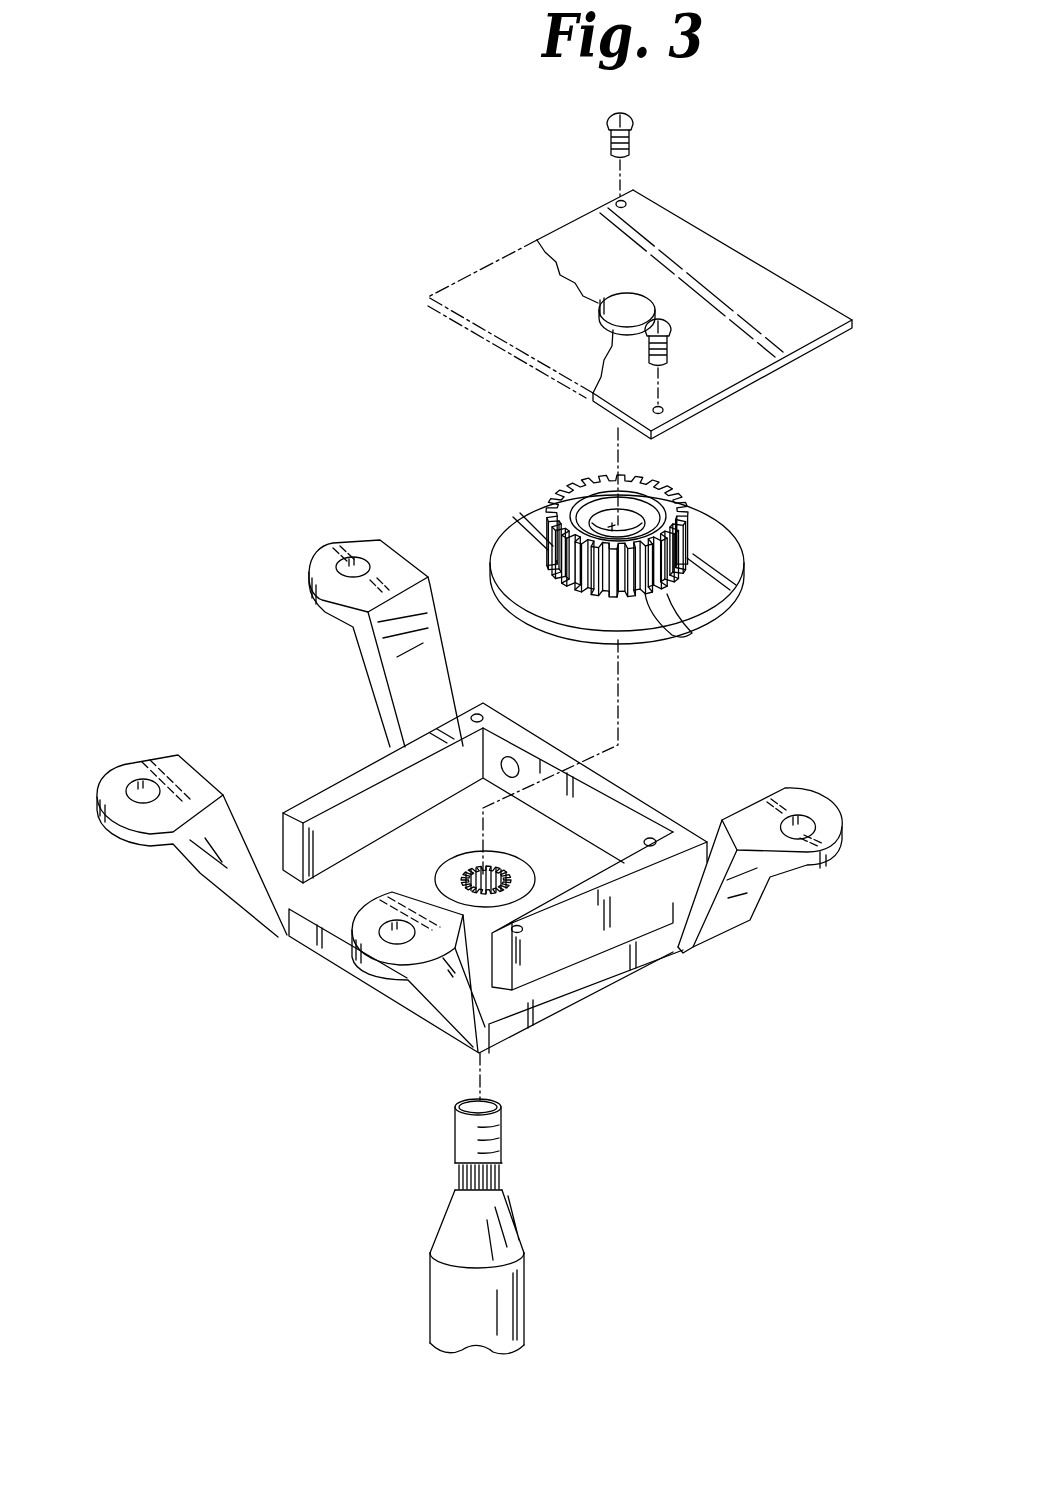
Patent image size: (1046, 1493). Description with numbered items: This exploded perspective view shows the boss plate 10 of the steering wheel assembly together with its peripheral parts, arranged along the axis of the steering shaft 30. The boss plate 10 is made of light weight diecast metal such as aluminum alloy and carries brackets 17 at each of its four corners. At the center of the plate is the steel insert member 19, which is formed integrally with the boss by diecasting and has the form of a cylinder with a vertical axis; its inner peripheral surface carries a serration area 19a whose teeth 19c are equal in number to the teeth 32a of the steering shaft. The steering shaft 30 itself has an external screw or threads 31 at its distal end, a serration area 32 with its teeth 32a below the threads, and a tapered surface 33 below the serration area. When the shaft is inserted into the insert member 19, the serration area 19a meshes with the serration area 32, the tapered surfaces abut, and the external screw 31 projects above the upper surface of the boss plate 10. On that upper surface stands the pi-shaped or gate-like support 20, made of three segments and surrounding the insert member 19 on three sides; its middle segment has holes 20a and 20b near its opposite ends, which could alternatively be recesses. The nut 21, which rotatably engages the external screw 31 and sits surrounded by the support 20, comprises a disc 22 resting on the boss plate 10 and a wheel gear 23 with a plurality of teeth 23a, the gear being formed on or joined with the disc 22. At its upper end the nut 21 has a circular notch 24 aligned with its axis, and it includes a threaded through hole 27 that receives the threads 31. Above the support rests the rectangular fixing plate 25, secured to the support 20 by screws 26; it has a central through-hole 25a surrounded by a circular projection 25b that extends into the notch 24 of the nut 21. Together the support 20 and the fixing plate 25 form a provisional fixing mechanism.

The boss plate 10 is at (307, 935).
The brackets 17 is at (372, 687).
The insert member 19 is at (520, 872).
The serration area 19a is at (493, 868).
The teeth 19c is at (465, 870).
The support 20 is at (320, 800).
The hole 20a is at (512, 757).
The hole 20b is at (646, 836).
The nut 21 is at (483, 512).
The disc 22 is at (740, 553).
The wheel gear 23 is at (675, 498).
The teeth 23a is at (685, 633).
The circular notch 24 is at (582, 495).
The fixing plate 25 is at (640, 308).
The through-hole 25a is at (643, 295).
The circular projection 25b is at (597, 306).
The screws 26 is at (640, 121).
The through hole 27 is at (632, 518).
The steering shaft 30 is at (488, 1226).
The external screw threads 31 is at (502, 1126).
The serration area 32 is at (504, 1160).
The teeth 32a is at (462, 1181).
The tapered surface 33 is at (520, 1218).